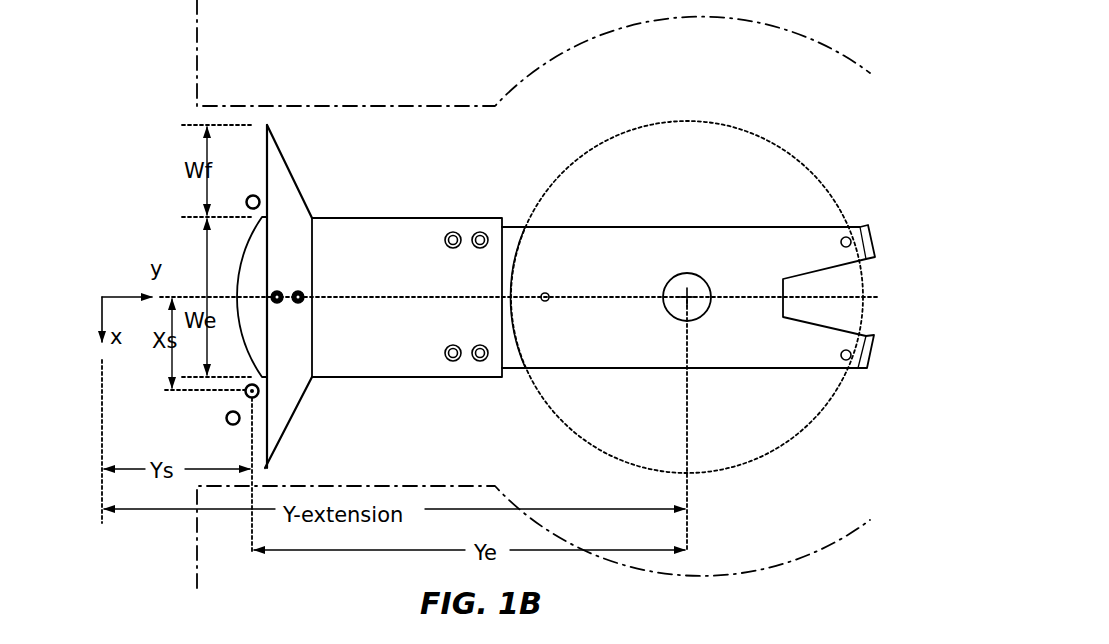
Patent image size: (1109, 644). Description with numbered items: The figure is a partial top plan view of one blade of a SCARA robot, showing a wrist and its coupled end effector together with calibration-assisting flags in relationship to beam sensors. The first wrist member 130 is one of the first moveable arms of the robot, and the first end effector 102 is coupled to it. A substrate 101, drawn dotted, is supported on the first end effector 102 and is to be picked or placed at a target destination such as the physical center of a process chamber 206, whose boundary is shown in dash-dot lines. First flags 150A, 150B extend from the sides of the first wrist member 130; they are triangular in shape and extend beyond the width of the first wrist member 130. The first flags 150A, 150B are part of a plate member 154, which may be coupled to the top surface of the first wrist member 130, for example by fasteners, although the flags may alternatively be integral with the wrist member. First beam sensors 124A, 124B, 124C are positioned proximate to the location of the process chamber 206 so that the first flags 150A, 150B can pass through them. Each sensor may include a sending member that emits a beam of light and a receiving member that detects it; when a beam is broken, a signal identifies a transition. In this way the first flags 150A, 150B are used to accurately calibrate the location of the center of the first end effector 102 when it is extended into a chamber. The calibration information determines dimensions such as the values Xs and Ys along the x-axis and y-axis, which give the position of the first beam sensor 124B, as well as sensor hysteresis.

The substrate 101 is at (541, 396).
The first end effector 102 is at (690, 227).
The first beam sensor 124A is at (260, 201).
The first beam sensor 124B is at (245, 392).
The first beam sensor 124C is at (227, 419).
The first wrist member 130 is at (400, 218).
The first flag 150A is at (296, 413).
The first flag 150B is at (320, 162).
The plate member 154 is at (312, 275).
The process chamber 206 is at (545, 51).